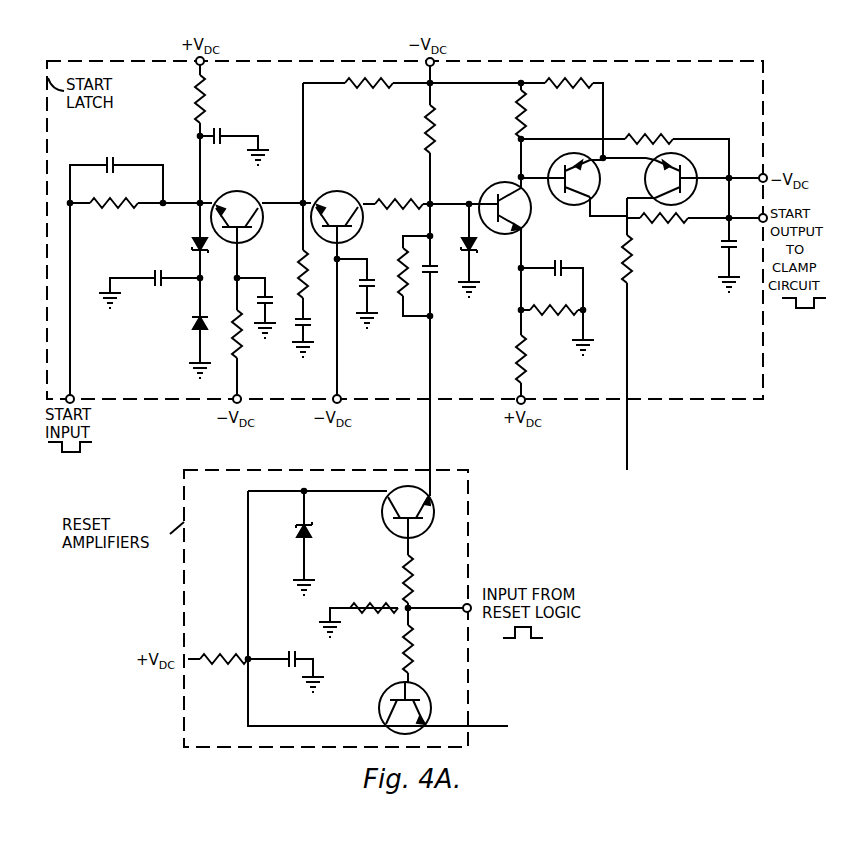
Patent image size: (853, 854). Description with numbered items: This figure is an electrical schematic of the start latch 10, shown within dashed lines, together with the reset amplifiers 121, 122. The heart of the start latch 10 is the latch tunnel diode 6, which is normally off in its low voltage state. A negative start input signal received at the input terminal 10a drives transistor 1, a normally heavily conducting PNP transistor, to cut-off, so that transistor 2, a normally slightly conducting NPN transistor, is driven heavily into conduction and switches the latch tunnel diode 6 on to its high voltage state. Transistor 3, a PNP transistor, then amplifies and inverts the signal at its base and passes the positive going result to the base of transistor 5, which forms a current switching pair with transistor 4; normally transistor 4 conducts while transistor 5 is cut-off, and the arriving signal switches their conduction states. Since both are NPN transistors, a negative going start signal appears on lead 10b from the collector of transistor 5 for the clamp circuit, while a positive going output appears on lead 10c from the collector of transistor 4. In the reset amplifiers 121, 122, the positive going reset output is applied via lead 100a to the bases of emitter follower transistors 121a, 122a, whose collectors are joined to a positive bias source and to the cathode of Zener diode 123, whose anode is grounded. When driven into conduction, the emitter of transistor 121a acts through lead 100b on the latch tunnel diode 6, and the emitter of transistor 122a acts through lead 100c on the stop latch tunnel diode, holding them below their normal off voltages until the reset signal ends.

The start latch 10 is at (107, 61).
The input terminal 10a is at (71, 350).
The lead 10b is at (706, 222).
The lead 10c is at (628, 298).
The transistor 1 is at (252, 234).
The transistor 2 is at (352, 233).
The transistor 3 is at (522, 224).
The transistor 4 is at (644, 180).
The transistor 5 is at (573, 197).
The latch tunnel diode 6 is at (479, 252).
The lead 100a is at (441, 608).
The lead 100b is at (431, 436).
The lead 100c is at (476, 726).
The reset amplifier 121 is at (330, 548).
The transistor 121a is at (427, 534).
The reset amplifier 122 is at (309, 608).
The transistor 122a is at (382, 712).
The Zener diode 123 is at (322, 520).